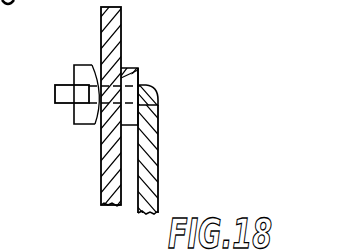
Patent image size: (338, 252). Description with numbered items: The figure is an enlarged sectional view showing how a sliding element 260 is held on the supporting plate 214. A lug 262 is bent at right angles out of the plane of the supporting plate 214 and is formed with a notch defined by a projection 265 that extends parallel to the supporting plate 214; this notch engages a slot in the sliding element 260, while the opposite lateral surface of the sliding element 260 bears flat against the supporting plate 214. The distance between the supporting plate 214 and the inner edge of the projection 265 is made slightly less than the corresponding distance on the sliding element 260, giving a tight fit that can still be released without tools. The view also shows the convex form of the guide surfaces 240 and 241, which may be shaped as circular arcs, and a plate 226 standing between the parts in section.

The supporting plate 214 is at (153, 170).
The plate 226 is at (117, 36).
The guide surface 240 is at (93, 115).
The guide surface 241 is at (123, 67).
The sliding element 260 is at (85, 64).
The lug 262 is at (150, 92).
The projection 265 is at (67, 96).